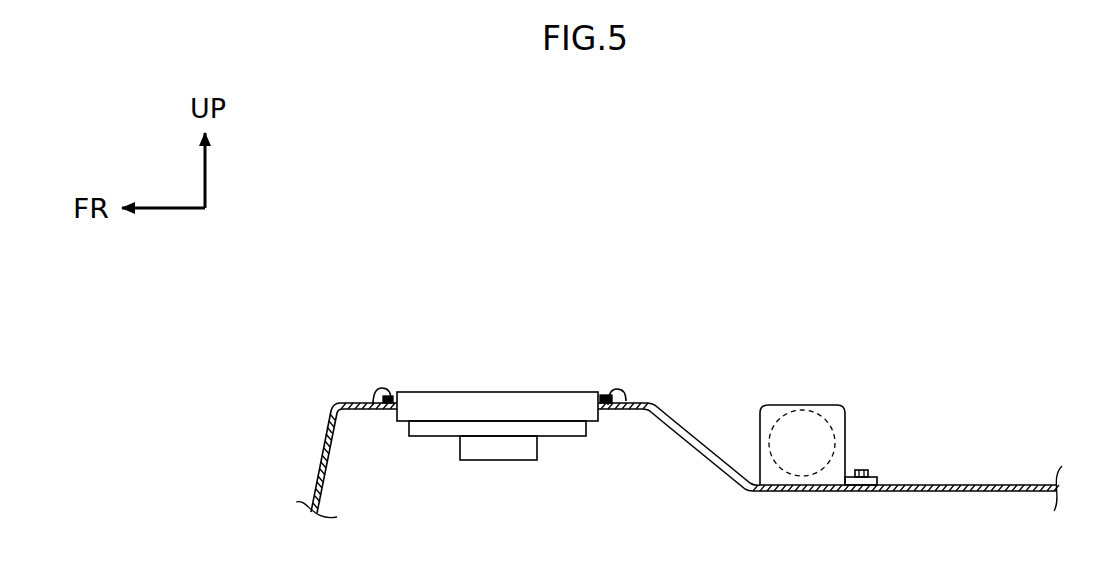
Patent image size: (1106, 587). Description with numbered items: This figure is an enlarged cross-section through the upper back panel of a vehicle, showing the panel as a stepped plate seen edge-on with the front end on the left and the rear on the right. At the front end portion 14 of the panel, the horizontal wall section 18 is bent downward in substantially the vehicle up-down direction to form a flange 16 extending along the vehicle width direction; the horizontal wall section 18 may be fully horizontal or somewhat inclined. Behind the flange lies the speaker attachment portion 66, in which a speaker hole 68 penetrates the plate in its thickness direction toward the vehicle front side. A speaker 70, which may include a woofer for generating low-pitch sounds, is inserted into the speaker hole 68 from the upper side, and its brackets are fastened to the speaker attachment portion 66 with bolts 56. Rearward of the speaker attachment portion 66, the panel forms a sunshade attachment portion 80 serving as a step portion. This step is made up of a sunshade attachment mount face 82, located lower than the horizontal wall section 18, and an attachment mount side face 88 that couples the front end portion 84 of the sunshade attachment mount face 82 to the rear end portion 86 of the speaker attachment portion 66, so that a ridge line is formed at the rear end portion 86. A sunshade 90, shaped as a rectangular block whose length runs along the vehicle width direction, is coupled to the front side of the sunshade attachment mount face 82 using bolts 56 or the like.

The front end portion 14 is at (351, 398).
The flange 16 is at (318, 470).
The horizontal wall section 18 is at (645, 404).
The bolt 56 is at (383, 409).
The speaker attachment portion 66 is at (499, 349).
The speaker hole 68 is at (400, 407).
The speaker 70 is at (517, 400).
The sunshade attachment portion 80 is at (813, 380).
The sunshade attachment mount face 82 is at (931, 485).
The front end portion 84 is at (757, 483).
The rear end portion 86 is at (656, 405).
The attachment mount side face 88 is at (700, 437).
The sunshade 90 is at (771, 415).